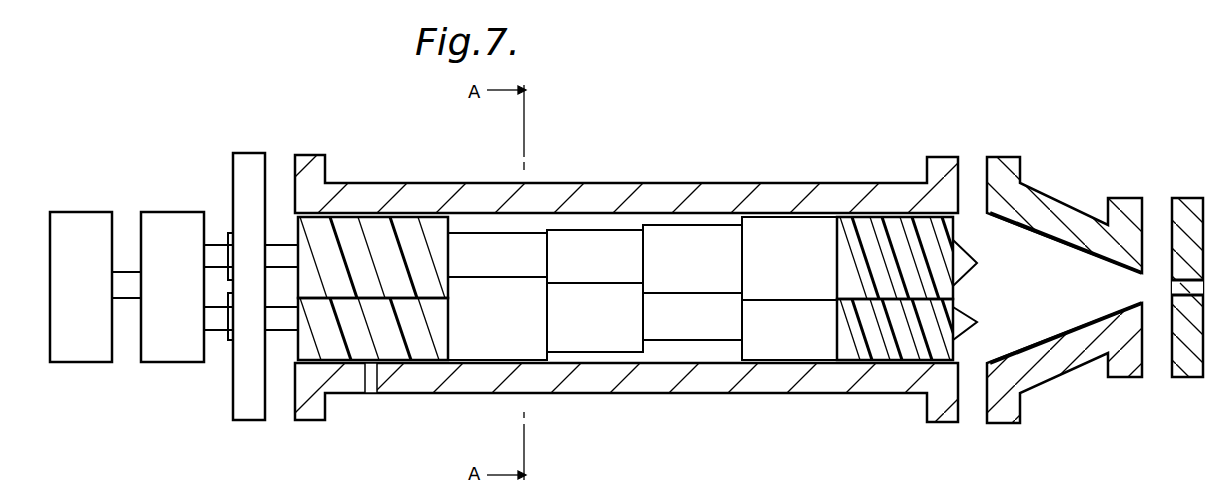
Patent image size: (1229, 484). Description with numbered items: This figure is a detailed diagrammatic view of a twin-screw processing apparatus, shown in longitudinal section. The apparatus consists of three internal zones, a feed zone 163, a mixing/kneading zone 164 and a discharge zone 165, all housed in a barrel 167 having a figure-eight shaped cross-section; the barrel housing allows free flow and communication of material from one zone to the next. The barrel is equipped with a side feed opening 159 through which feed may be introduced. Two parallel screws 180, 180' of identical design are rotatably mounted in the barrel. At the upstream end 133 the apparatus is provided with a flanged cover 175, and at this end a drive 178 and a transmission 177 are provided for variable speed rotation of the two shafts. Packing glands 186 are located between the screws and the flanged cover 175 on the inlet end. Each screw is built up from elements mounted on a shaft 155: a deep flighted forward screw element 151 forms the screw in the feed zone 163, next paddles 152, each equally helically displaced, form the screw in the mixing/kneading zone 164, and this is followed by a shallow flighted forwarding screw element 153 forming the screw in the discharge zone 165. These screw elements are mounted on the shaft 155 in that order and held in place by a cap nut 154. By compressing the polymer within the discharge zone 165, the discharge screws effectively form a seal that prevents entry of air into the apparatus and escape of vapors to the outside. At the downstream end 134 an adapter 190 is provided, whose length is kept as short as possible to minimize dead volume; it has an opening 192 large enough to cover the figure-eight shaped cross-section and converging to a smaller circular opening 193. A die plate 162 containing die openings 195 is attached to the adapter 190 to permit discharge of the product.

The drive 178 is at (72, 358).
The transmission 177 is at (165, 360).
The packing glands 186 is at (226, 234).
The flanged cover 175 is at (253, 153).
The upstream end 133 is at (246, 401).
The shaft 155 is at (280, 243).
The barrel 167 is at (488, 186).
The mixing/kneading zone 164 is at (705, 357).
The side feed opening 159 is at (373, 395).
The deep flighted forward screw element 151 is at (392, 232).
The feed zone 163 is at (448, 350).
The paddles 152 is at (610, 240).
The screw 180 is at (696, 225).
The screw 180' is at (770, 400).
The discharge zone 165 is at (848, 366).
The shallow flighted forwarding screw element 153 is at (880, 240).
The cap nut 154 is at (985, 292).
The opening 192 is at (1008, 220).
The circular opening 193 is at (1150, 260).
The adapter 190 is at (1072, 372).
The downstream end 134 is at (1032, 414).
The die plate 162 is at (1188, 198).
The die openings 195 is at (1172, 281).